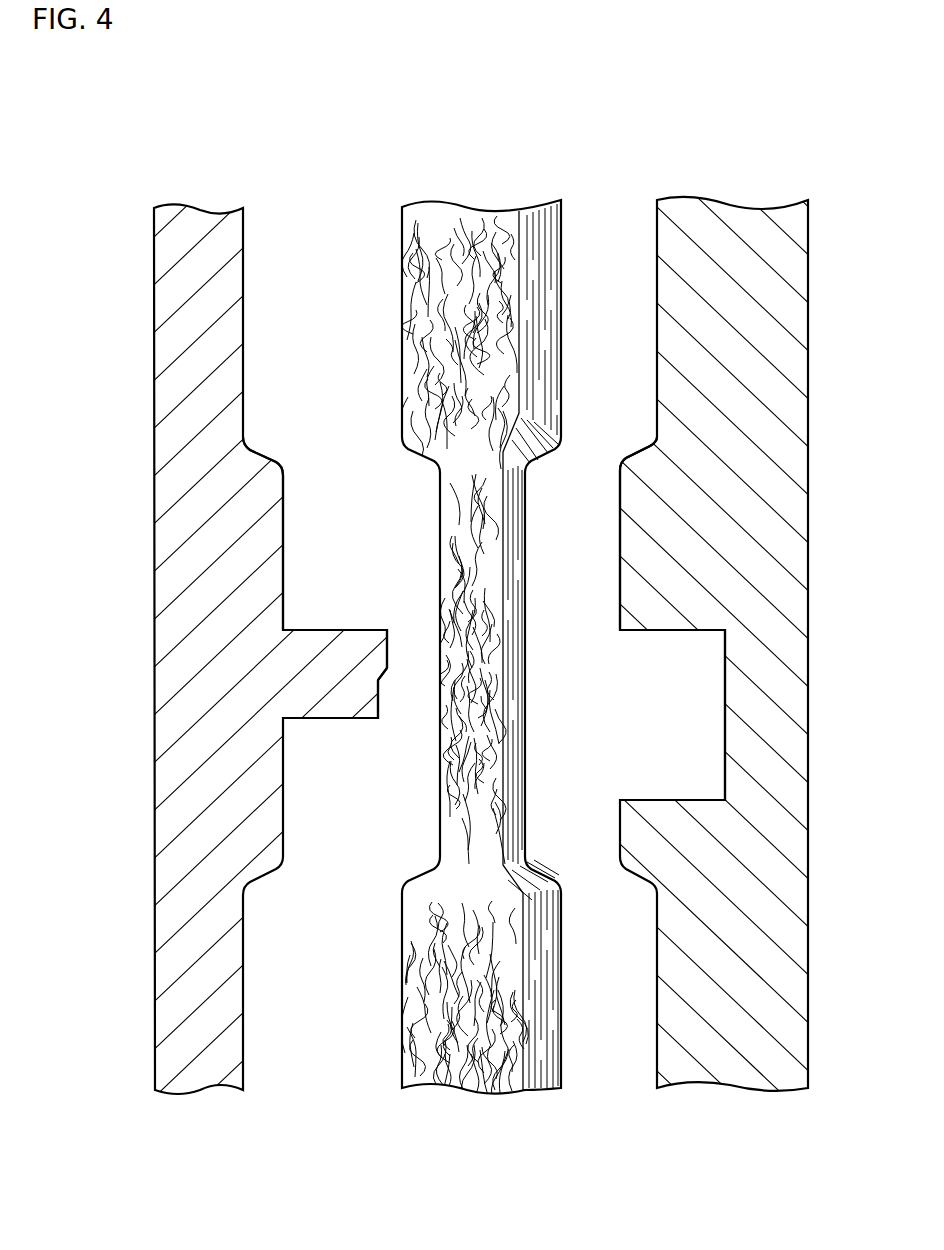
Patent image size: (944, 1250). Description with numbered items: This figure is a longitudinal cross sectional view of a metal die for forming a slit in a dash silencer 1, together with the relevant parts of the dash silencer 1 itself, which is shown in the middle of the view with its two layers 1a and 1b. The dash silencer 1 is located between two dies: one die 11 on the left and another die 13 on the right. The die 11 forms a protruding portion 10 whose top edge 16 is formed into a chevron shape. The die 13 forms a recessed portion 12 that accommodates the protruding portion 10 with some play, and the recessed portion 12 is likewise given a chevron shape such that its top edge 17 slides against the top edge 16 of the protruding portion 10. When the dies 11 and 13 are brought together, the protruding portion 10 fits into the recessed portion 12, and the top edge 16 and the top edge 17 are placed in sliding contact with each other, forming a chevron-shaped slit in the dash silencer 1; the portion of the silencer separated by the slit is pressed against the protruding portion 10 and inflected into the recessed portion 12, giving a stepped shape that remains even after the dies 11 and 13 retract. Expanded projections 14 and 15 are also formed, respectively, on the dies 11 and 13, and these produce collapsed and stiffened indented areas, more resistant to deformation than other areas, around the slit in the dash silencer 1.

The dash silencer 1 is at (488, 606).
The fiber layer 1a is at (472, 215).
The resin layer 1b is at (540, 208).
The protruding portion 10 is at (325, 708).
The die 11 is at (197, 209).
The recessed portion 12 is at (628, 722).
The die 13 is at (724, 200).
The expanded projection 14 is at (278, 525).
The expanded projection 15 is at (620, 492).
The top edge 16 is at (388, 630).
The top edge 17 is at (620, 630).